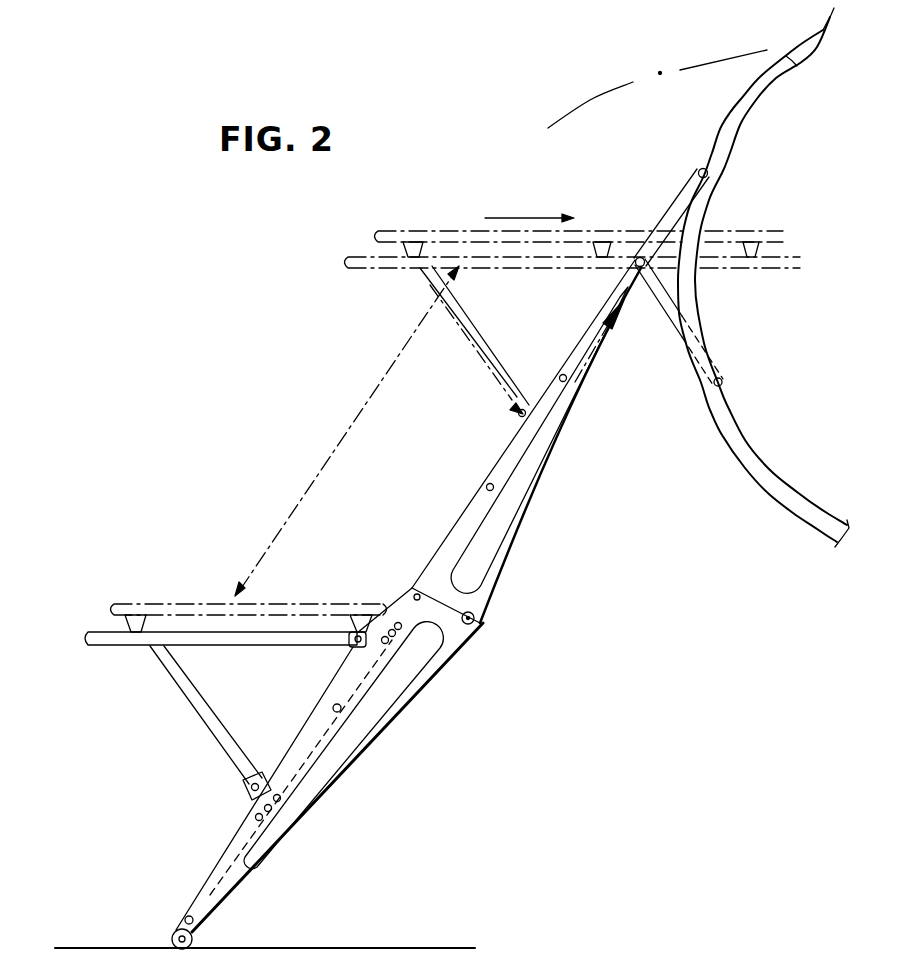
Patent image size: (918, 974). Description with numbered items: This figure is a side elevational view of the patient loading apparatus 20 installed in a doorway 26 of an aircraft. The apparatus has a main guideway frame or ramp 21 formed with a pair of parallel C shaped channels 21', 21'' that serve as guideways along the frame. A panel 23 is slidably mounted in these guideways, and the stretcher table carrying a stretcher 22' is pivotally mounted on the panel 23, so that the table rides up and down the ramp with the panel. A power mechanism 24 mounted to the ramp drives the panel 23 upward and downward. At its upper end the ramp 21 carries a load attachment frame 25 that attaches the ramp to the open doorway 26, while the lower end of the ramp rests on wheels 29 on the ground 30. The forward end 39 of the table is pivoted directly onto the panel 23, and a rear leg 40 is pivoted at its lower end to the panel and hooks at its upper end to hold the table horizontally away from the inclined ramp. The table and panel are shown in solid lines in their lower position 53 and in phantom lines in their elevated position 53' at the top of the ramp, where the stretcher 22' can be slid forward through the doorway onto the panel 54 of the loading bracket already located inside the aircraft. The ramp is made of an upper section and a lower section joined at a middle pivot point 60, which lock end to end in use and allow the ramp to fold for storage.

The patient loading apparatus 20 is at (493, 613).
The main guideway frame or ramp 21 is at (528, 441).
The C shaped channel 21' is at (533, 376).
The C shaped channel 21'' is at (523, 440).
The stretcher 22' is at (397, 415).
The panel 23 is at (315, 727).
The power mechanism 24 is at (277, 813).
The load attachment frame 25 is at (658, 222).
The doorway 26 is at (715, 138).
The wheels 29 is at (200, 938).
The ground 30 is at (352, 948).
The forward end of the table 39 is at (345, 650).
The rear leg 40 is at (167, 675).
The lower position 53 is at (210, 596).
The elevated position 53' is at (555, 285).
The panel of the loading bracket 54 is at (763, 228).
The pivot point 60 is at (480, 628).